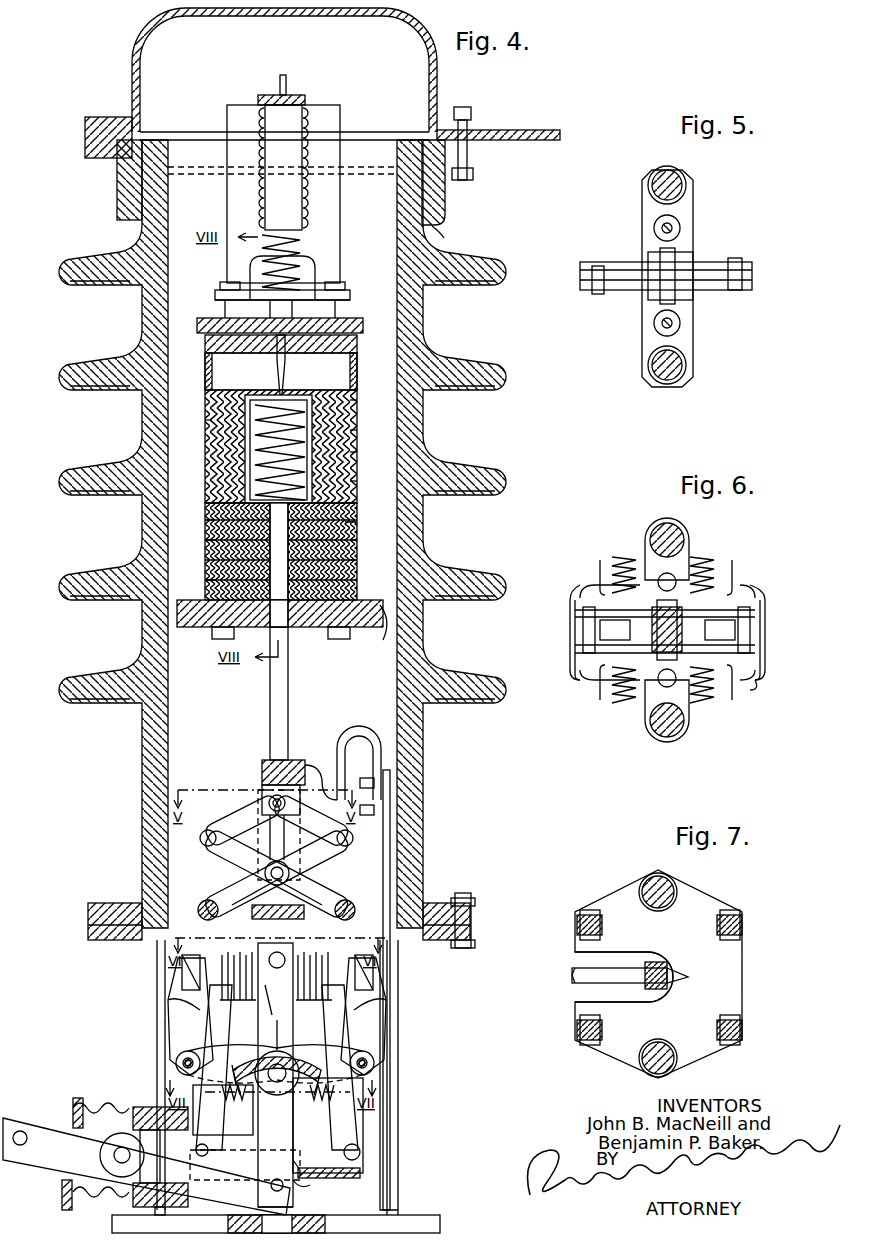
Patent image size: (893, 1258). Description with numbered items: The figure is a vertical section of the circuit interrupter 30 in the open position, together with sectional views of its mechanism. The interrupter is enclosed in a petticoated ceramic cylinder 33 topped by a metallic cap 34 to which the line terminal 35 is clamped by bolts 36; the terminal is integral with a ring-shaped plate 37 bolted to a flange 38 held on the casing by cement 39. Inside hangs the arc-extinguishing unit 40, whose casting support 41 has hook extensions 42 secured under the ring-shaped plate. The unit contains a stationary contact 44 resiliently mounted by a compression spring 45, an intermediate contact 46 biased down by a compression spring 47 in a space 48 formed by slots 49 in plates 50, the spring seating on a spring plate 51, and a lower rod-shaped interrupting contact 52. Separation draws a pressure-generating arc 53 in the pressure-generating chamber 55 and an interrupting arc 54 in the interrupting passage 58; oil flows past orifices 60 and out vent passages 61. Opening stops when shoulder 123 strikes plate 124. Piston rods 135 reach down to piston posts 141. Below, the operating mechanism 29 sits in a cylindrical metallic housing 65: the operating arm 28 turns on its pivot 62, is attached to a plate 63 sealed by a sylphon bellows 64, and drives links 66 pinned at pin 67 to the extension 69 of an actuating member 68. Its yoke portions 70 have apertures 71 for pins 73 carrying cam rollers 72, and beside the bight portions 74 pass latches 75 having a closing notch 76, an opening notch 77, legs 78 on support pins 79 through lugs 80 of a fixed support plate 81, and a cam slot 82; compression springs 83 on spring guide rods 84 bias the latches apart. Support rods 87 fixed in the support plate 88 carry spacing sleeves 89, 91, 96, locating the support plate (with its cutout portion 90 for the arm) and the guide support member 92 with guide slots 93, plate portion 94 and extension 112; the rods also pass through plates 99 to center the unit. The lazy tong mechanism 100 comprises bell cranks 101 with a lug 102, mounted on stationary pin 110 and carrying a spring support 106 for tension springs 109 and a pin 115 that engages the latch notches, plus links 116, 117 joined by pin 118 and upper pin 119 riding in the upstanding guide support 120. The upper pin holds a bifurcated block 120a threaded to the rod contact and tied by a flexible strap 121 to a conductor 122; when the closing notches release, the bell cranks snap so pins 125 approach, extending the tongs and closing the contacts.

In FIG. 4, the operating arm 28 is at (146, 1154).
In FIG. 7, the operating arm 28 is at (580, 992).
In FIG. 4, the operating mechanism 29 is at (277, 1016).
In FIG. 4, the circuit interrupter 30 is at (282, 534).
In FIG. 4, the ceramic cylinder 33 is at (430, 462).
In FIG. 4, the cap 34 is at (150, 22).
In FIG. 4, the line terminal 35 is at (528, 130).
In FIG. 4, the bolts 36 is at (468, 108).
In FIG. 4, the ring-shaped plate 37 is at (88, 120).
In FIG. 4, the flange 38 is at (445, 201).
In FIG. 4, the cement 39 is at (440, 230).
In FIG. 4, the arc-extinguishing unit 40 is at (266, 495).
In FIG. 4, the casting support 41 is at (350, 320).
In FIG. 4, the hook extensions 42 is at (340, 120).
In FIG. 4, the stationary contact 44 is at (281, 353).
In FIG. 4, the compression spring 45 is at (300, 275).
In FIG. 4, the intermediate contact 46 is at (357, 402).
In FIG. 4, the compression spring 47 is at (357, 432).
In FIG. 4, the space 48 is at (357, 453).
In FIG. 4, the slots 49 is at (357, 481).
In FIG. 4, the plates 50 is at (205, 430).
In FIG. 4, the spring plate 51 is at (357, 503).
In FIG. 4, the rod-shaped interrupting contact 52 is at (288, 665).
In FIG. 4, the pressure-generating arc 53 is at (287, 370).
In FIG. 4, the interrupting arc 54 is at (357, 540).
In FIG. 4, the pressure-generating chamber 55 is at (281, 371).
In FIG. 4, the interrupting passage 58 is at (205, 542).
In FIG. 4, the orifices 60 is at (357, 560).
In FIG. 4, the vent passages 61 is at (357, 522).
In FIG. 4, the pivot 62 is at (125, 1148).
In FIG. 4, the plate 63 is at (74, 1108).
In FIG. 4, the sylphon bellows 64 is at (105, 1105).
In FIG. 4, the cylindrical metallic housing 65 is at (398, 1040).
In FIG. 4, the links 66 is at (293, 1137).
In FIG. 7, the links 66 is at (680, 975).
In FIG. 4, the pin 67 is at (278, 1095).
In FIG. 4, the actuating member 68 is at (306, 1050).
In FIG. 4, the extension 69 is at (297, 1070).
In FIG. 4, the yoke portions 70 is at (275, 1049).
In FIG. 4, the apertures 71 is at (176, 1065).
In FIG. 4, the cam rollers 72 is at (182, 1055).
In FIG. 4, the pins 73 is at (176, 1058).
In FIG. 4, the bight portions 74 is at (244, 1075).
In FIG. 4, the latches 75 is at (224, 1013).
In FIG. 6, the latches 75 is at (600, 630).
In FIG. 4, the closing notch 76 is at (324, 957).
In FIG. 4, the opening notch 77 is at (279, 941).
In FIG. 4, the legs 78 is at (200, 1130).
In FIG. 7, the legs 78 is at (602, 925).
In FIG. 4, the support pins 79 is at (360, 1152).
In FIG. 4, the lugs 80 is at (225, 1158).
In FIG. 7, the lugs 80 is at (580, 915).
In FIG. 4, the support plate 81 is at (316, 1189).
In FIG. 7, the support plate 81 is at (705, 897).
In FIG. 4, the cam slot 82 is at (168, 1002).
In FIG. 4, the compression springs 83 is at (236, 1100).
In FIG. 4, the spring guide rods 84 is at (223, 1112).
In FIG. 5, the support rods 87 is at (662, 170).
In FIG. 6, the support rods 87 is at (672, 525).
In FIG. 7, the support rods 87 is at (658, 876).
In FIG. 4, the support plate 88 is at (420, 1215).
In FIG. 4, the spacing sleeves 89 is at (290, 1205).
In FIG. 4, the cutout portion 90 is at (295, 1180).
In FIG. 7, the cutout portion 90 is at (640, 955).
In FIG. 6, the spacing sleeves 91 is at (664, 522).
In FIG. 7, the spacing sleeves 91 is at (676, 884).
In FIG. 4, the guide support member 92 is at (230, 815).
In FIG. 5, the guide support member 92 is at (694, 228).
In FIG. 4, the guide slots 93 is at (292, 820).
In FIG. 4, the plate portion 94 is at (296, 892).
In FIG. 5, the plate portion 94 is at (694, 258).
In FIG. 5, the spacing sleeves 96 is at (674, 168).
In FIG. 4, the plates 99 is at (284, 629).
In FIG. 4, the lazy tong mechanism 100 is at (240, 842).
In FIG. 4, the bell cranks 101 is at (277, 899).
In FIG. 6, the bell cranks 101 is at (580, 600).
In FIG. 4, the lug 102 is at (158, 983).
In FIG. 4, the spring support 106 is at (182, 968).
In FIG. 6, the spring support 106 is at (576, 620).
In FIG. 6, the tension springs 109 is at (612, 560).
In FIG. 4, the stationary pin 110 is at (279, 1009).
In FIG. 6, the stationary pin 110 is at (682, 570).
In FIG. 6, the extension 112 is at (760, 685).
In FIG. 4, the pin 115 is at (215, 965).
In FIG. 6, the pin 115 is at (575, 672).
In FIG. 4, the links 116 is at (212, 905).
In FIG. 4, the links 117 is at (230, 800).
In FIG. 4, the pin 118 is at (290, 865).
In FIG. 4, the upper pin 119 is at (268, 850).
In FIG. 4, the upstanding guide support 120 is at (262, 800).
In FIG. 4, the bifurcated block 120a is at (292, 760).
In FIG. 4, the flexible strap 121 is at (350, 735).
In FIG. 4, the conductor 122 is at (392, 998).
In FIG. 4, the shoulder 123 is at (205, 520).
In FIG. 4, the plate 124 is at (205, 505).
In FIG. 4, the pins 125 is at (205, 905).
In FIG. 4, the piston rods 135 is at (286, 386).
In FIG. 5, the piston posts 141 is at (672, 225).